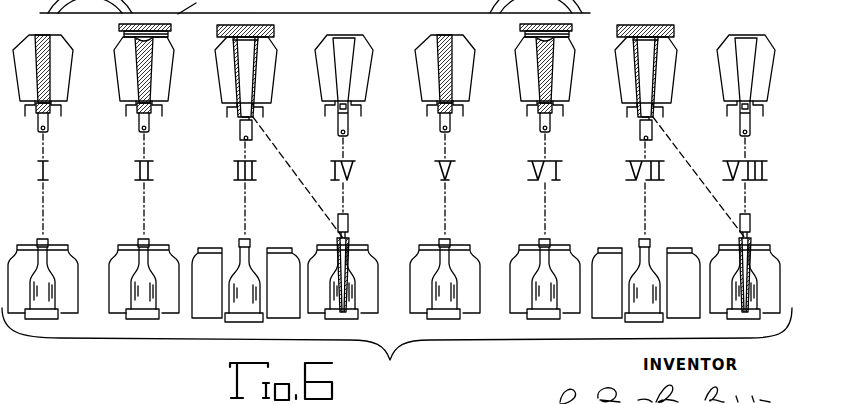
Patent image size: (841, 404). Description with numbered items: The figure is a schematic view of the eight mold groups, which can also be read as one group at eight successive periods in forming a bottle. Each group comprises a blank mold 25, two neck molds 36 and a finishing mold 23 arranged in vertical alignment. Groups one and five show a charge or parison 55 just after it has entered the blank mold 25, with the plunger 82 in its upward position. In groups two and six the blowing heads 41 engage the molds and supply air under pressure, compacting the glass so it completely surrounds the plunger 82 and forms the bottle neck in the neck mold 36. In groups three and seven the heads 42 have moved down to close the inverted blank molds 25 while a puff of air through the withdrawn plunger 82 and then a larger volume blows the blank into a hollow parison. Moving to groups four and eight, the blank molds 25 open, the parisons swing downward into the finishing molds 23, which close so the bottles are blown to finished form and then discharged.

The finishing mold 23 is at (120, 262).
The blank mold 25 is at (118, 68).
The neck mold 36 is at (127, 115).
The blowing head 41 is at (573, 33).
The head 42 is at (275, 29).
The charge or parison 55 is at (47, 33).
The plunger 82 is at (260, 127).